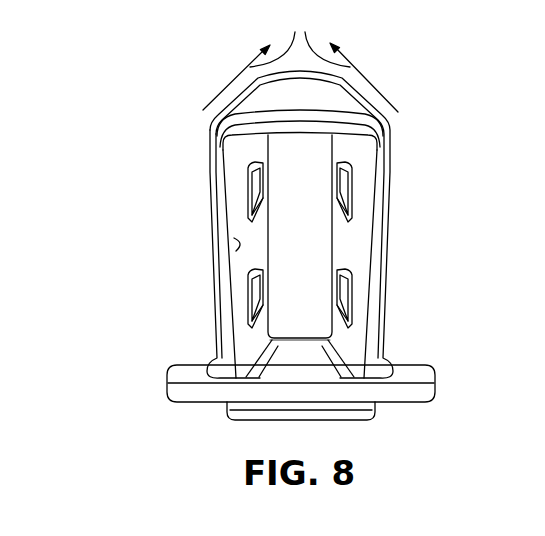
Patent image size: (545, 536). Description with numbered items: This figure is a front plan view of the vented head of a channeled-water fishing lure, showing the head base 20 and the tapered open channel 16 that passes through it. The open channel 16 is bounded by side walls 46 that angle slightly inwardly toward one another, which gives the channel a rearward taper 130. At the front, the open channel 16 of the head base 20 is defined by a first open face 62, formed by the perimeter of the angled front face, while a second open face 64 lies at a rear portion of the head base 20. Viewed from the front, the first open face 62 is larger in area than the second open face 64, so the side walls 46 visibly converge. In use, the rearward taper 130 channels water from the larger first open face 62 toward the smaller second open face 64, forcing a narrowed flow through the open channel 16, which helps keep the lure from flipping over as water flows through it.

The head base 20 is at (120, 168).
The open channel 16 is at (302, 290).
The side walls 46 is at (350, 246).
The first open face 62 is at (400, 307).
The second open face 64 is at (283, 213).
The rearward taper 130 is at (300, 58).